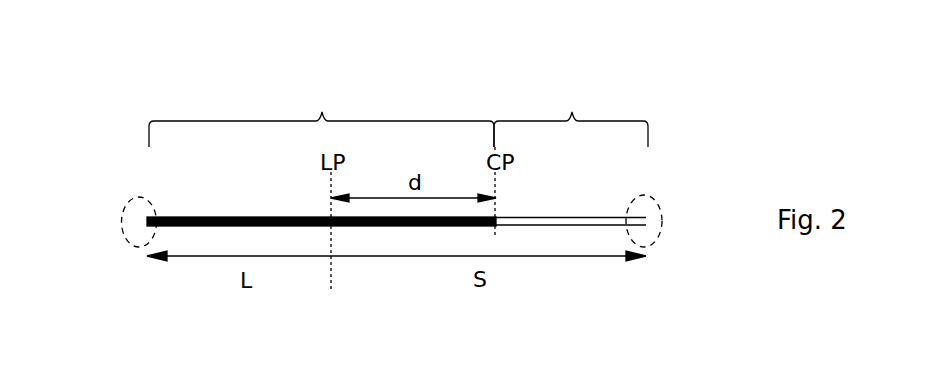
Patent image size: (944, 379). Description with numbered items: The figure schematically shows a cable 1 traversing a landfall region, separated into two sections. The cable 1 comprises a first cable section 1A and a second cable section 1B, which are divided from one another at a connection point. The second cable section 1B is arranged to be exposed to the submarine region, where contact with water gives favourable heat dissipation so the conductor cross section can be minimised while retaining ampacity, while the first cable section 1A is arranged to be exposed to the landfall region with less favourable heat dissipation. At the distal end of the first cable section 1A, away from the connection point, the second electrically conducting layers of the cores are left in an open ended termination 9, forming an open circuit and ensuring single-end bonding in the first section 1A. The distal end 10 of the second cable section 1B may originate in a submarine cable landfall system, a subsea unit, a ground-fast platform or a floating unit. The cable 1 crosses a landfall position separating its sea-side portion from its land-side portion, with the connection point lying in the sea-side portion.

The cable 1 is at (705, 77).
The first cable section 1A is at (322, 112).
The second cable section 1B is at (572, 112).
The open ended termination 9 is at (122, 208).
The distal end of the second cable section 10 is at (653, 200).